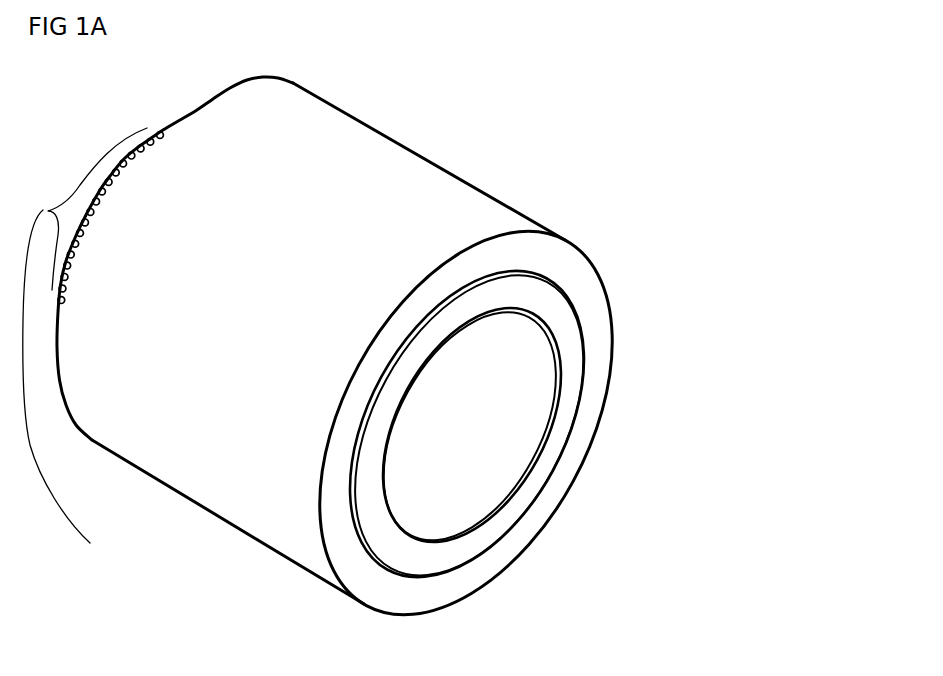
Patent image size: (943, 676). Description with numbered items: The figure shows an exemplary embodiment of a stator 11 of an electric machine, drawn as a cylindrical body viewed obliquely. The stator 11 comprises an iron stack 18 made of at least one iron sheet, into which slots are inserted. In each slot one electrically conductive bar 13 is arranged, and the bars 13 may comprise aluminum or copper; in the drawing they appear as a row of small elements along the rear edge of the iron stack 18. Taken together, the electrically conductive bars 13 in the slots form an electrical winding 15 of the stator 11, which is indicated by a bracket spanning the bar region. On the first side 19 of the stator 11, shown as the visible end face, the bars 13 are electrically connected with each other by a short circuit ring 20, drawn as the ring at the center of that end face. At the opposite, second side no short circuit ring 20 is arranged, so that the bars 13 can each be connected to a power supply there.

The stator 11 is at (650, 127).
The electrically conductive bar 13 is at (110, 170).
The electrical winding 15 is at (86, 383).
The iron stack 18 is at (383, 152).
The first side 19 is at (578, 268).
The short circuit ring 20 is at (578, 370).